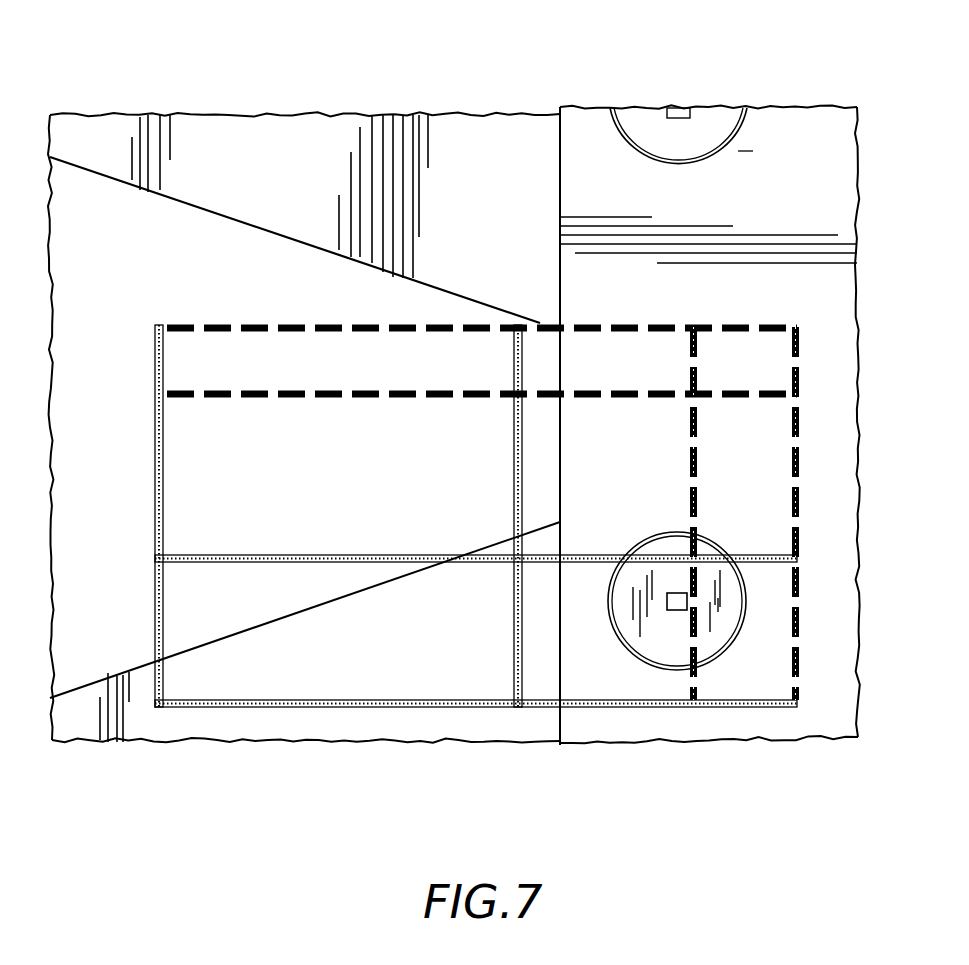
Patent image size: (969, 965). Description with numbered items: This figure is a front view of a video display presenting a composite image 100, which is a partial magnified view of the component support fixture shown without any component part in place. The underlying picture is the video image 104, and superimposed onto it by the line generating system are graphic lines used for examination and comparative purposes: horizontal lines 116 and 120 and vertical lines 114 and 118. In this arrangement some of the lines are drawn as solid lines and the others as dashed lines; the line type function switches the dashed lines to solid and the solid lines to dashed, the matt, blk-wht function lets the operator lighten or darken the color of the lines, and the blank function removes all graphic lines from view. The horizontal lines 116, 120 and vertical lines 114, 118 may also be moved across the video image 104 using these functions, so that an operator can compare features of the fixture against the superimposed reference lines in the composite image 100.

The composite image 100 is at (367, 100).
The video image 104 is at (800, 201).
The vertical line 114 is at (155, 455).
The horizontal line 116 is at (257, 323).
The vertical line 118 is at (690, 463).
The horizontal line 120 is at (293, 553).